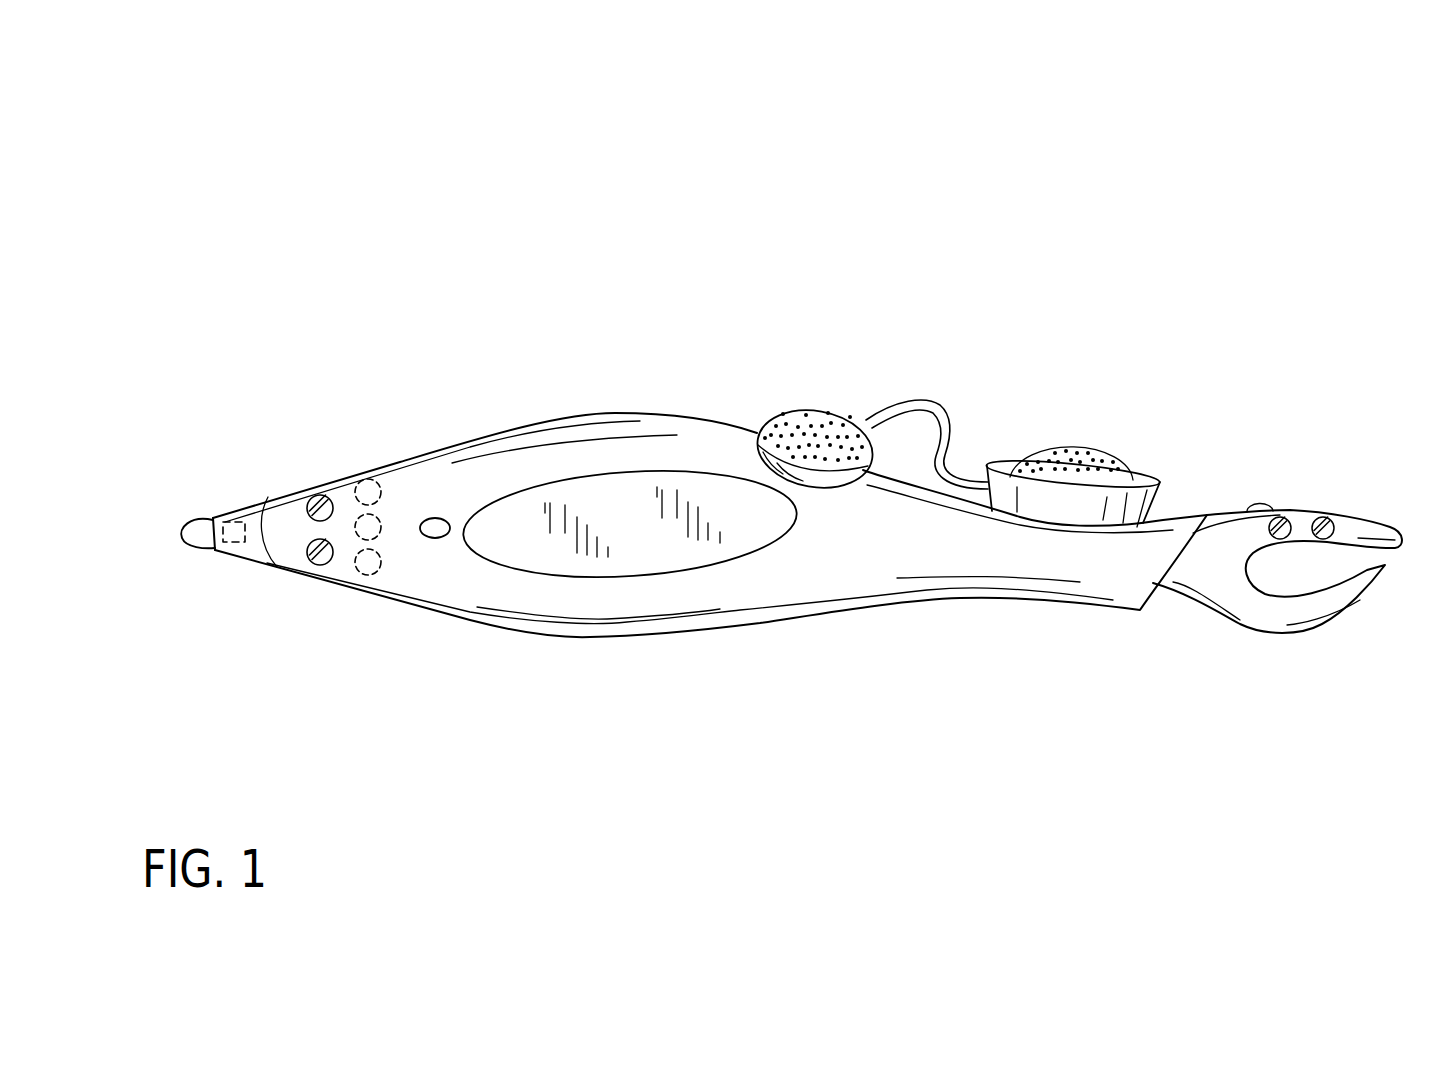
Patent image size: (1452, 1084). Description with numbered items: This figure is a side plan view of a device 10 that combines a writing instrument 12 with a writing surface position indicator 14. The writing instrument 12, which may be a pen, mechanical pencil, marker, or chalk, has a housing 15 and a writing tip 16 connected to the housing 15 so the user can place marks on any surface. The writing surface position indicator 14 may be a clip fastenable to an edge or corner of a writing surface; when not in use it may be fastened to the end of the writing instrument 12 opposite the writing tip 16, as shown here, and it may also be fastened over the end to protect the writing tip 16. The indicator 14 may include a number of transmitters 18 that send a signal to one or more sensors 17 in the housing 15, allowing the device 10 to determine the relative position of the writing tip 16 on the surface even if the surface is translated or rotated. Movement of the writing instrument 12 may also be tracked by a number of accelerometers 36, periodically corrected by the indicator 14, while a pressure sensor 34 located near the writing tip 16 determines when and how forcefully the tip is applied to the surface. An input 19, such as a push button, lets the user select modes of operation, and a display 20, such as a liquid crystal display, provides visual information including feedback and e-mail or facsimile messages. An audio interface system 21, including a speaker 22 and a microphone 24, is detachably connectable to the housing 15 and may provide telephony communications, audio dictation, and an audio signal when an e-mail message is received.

The device 10 is at (408, 237).
The writing instrument 12 is at (333, 630).
The writing surface position indicator 14 is at (1255, 612).
The housing 15 is at (558, 438).
The writing tip 16 is at (199, 528).
The sensors 17 is at (310, 541).
The transmitters 18 is at (1283, 517).
The input 19 is at (435, 518).
The display 20 is at (692, 483).
The audio interface system 21 is at (1018, 323).
The speaker 22 is at (832, 412).
The microphone 24 is at (1097, 448).
The pressure sensor 34 is at (232, 541).
The accelerometers 36 is at (378, 570).